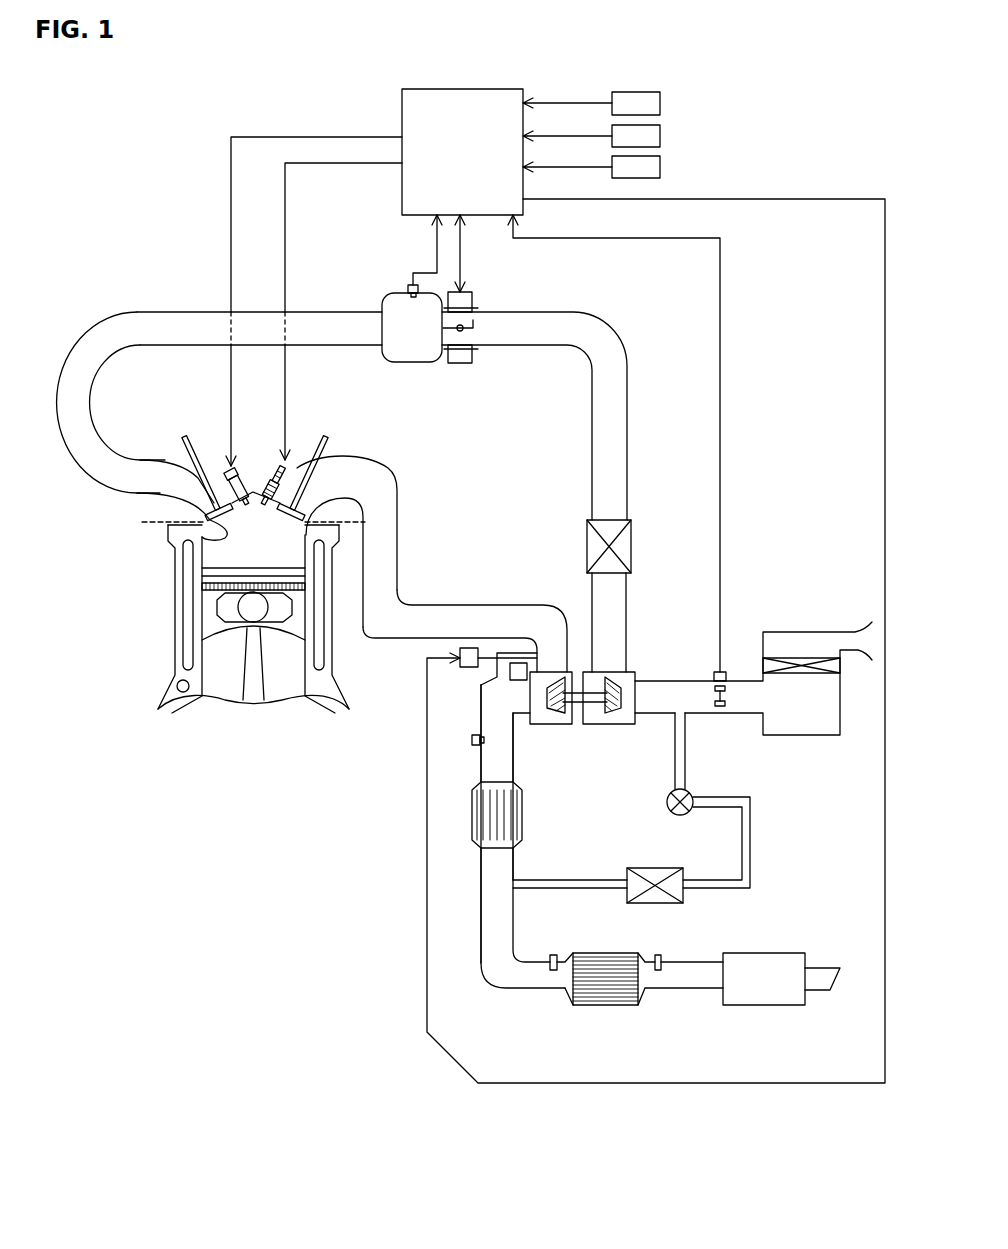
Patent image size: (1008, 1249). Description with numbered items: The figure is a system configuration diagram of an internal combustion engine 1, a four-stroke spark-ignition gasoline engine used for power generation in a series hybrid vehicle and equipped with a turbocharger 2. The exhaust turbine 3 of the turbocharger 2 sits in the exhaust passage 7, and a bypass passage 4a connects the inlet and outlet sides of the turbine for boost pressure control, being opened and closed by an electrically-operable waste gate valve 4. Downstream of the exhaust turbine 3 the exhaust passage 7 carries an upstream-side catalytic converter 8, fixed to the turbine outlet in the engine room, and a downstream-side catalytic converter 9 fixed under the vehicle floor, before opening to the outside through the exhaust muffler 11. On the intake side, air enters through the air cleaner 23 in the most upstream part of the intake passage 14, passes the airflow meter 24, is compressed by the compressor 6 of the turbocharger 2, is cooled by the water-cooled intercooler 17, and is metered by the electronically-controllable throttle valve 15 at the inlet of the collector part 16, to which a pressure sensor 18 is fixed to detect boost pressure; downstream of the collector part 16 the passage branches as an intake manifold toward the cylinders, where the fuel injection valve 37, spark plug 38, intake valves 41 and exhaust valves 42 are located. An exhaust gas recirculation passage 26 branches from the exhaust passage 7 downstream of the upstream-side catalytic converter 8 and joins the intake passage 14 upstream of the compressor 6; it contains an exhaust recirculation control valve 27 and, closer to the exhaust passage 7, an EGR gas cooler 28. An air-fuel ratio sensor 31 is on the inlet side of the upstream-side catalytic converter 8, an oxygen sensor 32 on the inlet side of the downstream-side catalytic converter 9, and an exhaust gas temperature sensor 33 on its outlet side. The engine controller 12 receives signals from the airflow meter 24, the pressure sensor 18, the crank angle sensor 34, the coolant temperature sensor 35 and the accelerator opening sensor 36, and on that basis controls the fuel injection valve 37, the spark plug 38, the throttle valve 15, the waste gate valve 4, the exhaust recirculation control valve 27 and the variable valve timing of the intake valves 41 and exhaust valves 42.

The internal combustion engine 1 is at (140, 626).
The turbocharger 2 is at (557, 793).
The exhaust turbine 3 is at (552, 727).
The waste gate valve 4 is at (470, 668).
The bypass passage 4a is at (513, 652).
The compressor 6 is at (618, 727).
The exhaust passage 7 is at (478, 618).
The upstream-side catalytic converter 8 is at (522, 838).
The downstream-side catalytic converter 9 is at (605, 1007).
The exhaust muffler 11 is at (765, 1007).
The engine controller 12 is at (400, 190).
The intake passage 14 is at (317, 322).
The throttle valve 15 is at (474, 320).
The collector part 16 is at (411, 365).
The water-cooled intercooler 17 is at (632, 548).
The pressure sensor 18 is at (408, 285).
The air cleaner 23 is at (802, 663).
The airflow meter 24 is at (728, 692).
The exhaust gas recirculation passage 26 is at (750, 868).
The exhaust recirculation control valve 27 is at (694, 795).
The EGR gas cooler 28 is at (648, 868).
The air-fuel ratio sensor 31 is at (470, 741).
The oxygen sensor 32 is at (556, 955).
The exhaust gas temperature sensor 33 is at (660, 955).
The crank angle sensor 34 is at (660, 140).
The coolant temperature sensor 35 is at (660, 104).
The accelerator opening sensor 36 is at (660, 170).
The fuel injection valve 37 is at (228, 466).
The spark plug 38 is at (276, 470).
The intake valves 41 is at (170, 528).
The exhaust valves 42 is at (365, 522).